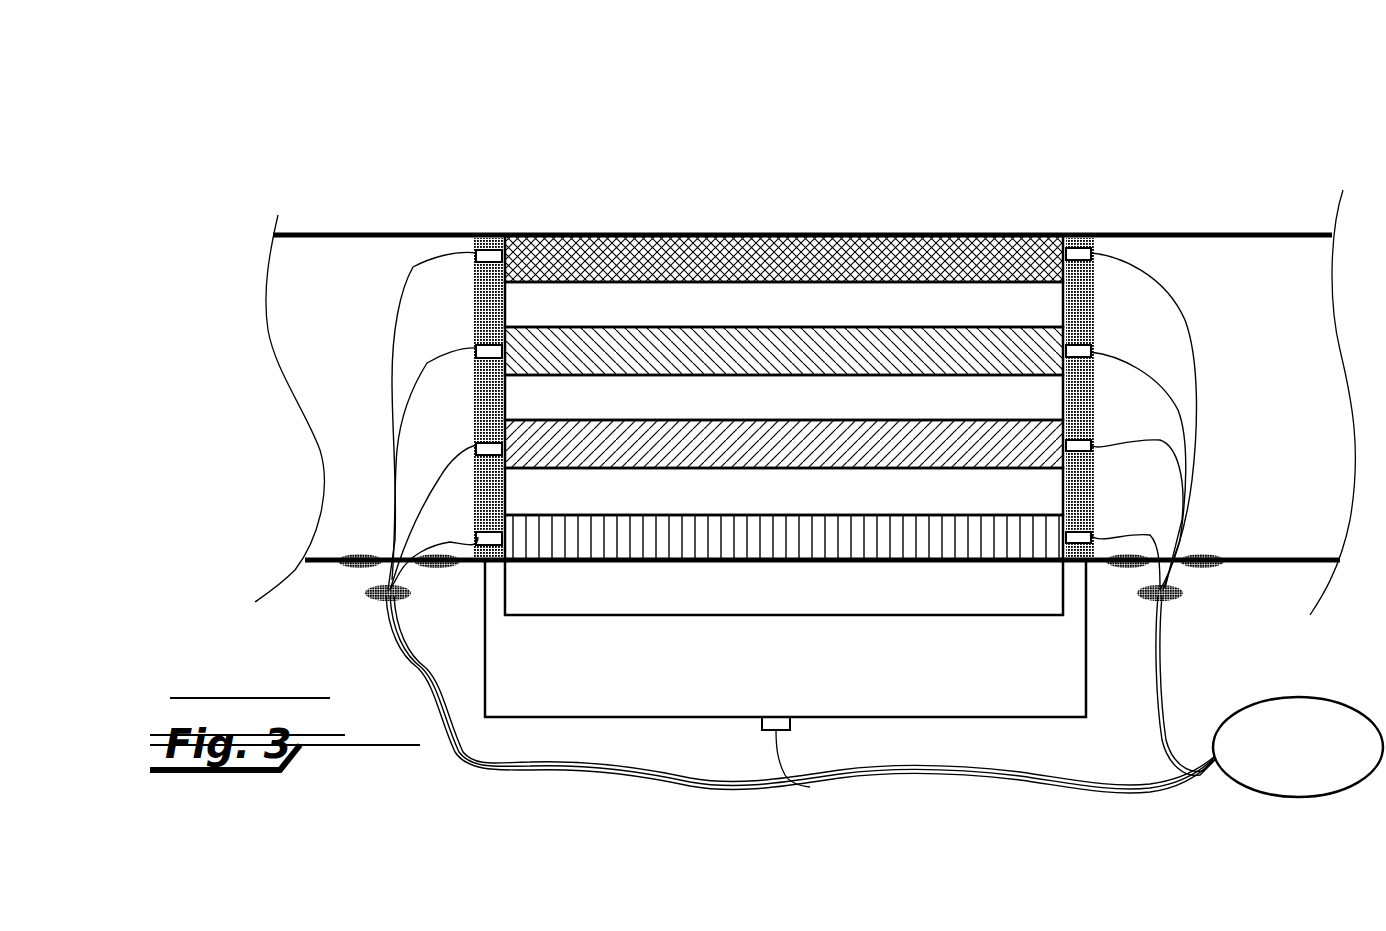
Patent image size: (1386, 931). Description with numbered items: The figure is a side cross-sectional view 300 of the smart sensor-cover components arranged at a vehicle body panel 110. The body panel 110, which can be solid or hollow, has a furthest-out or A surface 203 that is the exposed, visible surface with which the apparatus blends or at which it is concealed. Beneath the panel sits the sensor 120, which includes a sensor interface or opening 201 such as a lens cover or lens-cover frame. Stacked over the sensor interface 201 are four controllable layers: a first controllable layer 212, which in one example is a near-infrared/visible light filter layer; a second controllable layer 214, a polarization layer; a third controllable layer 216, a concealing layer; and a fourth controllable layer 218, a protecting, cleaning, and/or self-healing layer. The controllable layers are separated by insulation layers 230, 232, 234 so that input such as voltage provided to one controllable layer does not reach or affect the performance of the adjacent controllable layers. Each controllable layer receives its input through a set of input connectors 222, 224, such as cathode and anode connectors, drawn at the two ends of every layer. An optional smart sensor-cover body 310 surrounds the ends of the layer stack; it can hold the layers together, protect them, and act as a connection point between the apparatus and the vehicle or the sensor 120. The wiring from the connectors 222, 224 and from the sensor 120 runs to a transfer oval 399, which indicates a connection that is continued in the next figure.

The body panel 110 is at (428, 182).
The sensor 120 is at (1040, 682).
The sensor interface or opening 201 is at (800, 609).
The A surface 203 is at (330, 218).
The first controllable layer 212 is at (738, 557).
The second controllable layer 214 is at (740, 463).
The third controllable layer 216 is at (735, 370).
The fourth controllable layer 218 is at (735, 277).
The input connector 222 is at (512, 252).
The input connector 224 is at (1055, 248).
The insulation layer 230 is at (845, 509).
The insulation layer 232 is at (845, 414).
The insulation layer 234 is at (850, 318).
The side cross-sectional view 300 is at (1262, 85).
The smart sensor-cover body 310 is at (1095, 316).
The transfer oval 399 is at (1298, 747).